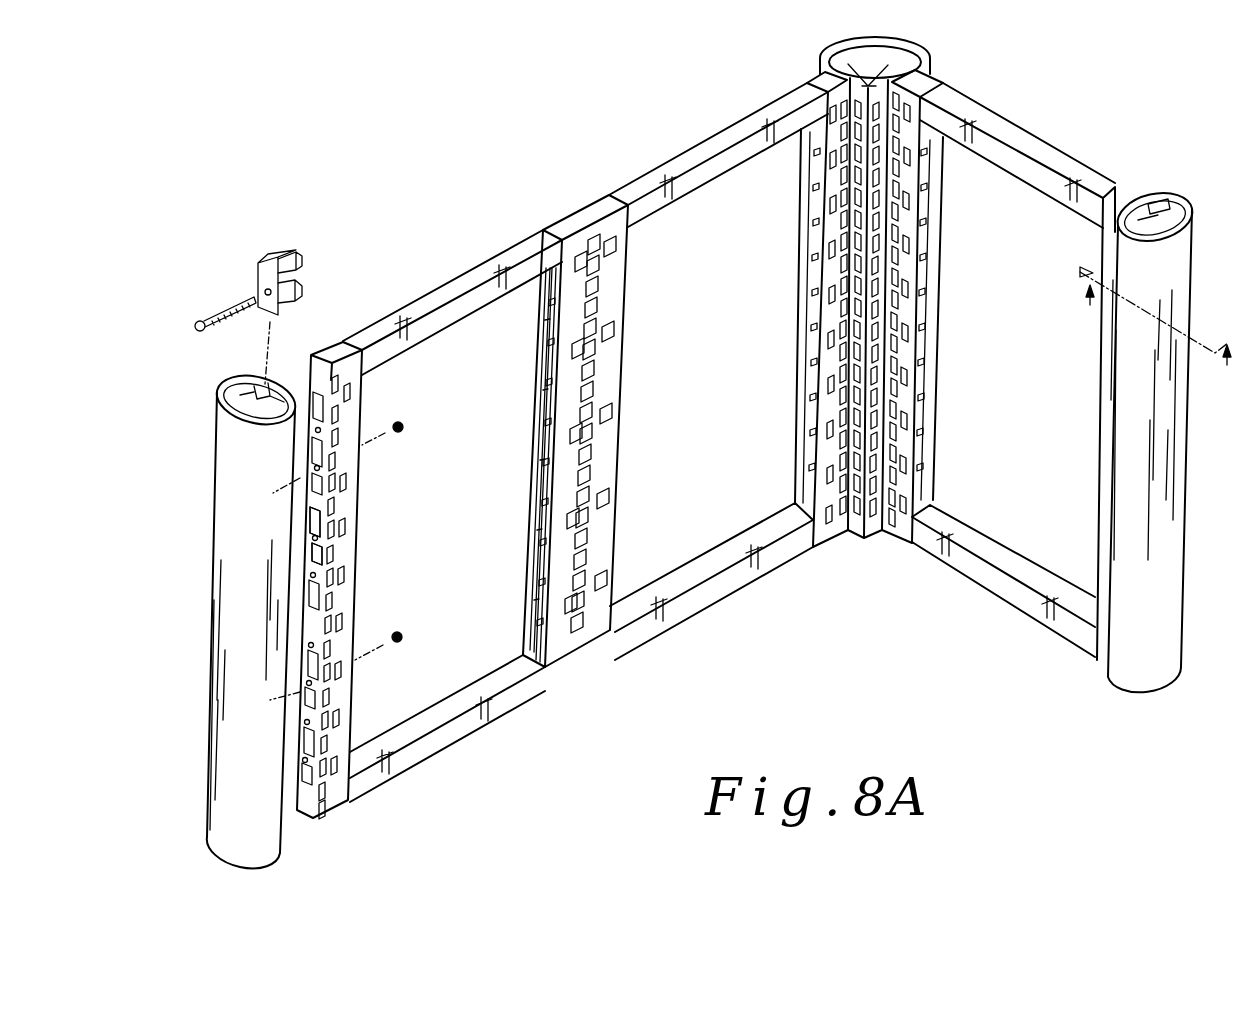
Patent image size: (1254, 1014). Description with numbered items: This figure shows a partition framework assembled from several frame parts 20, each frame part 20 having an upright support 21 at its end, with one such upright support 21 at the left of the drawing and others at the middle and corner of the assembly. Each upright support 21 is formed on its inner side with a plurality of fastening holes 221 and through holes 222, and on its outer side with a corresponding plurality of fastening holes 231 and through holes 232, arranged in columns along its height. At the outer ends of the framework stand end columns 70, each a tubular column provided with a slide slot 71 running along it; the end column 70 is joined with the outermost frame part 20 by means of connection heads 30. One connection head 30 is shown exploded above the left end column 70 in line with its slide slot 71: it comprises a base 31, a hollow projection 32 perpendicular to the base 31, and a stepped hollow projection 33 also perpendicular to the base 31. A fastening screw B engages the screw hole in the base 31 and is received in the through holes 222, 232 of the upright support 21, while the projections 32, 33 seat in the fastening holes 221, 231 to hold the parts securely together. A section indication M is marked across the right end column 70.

The frame part 20 is at (453, 288).
The upright support 21 is at (340, 346).
The fastening hole 221 is at (548, 382).
The through hole 222 is at (545, 403).
The fastening hole 231 is at (323, 520).
The through hole 232 is at (323, 541).
The connection head 30 is at (303, 280).
The base 31 is at (264, 278).
The hollow projection 32 is at (301, 300).
The stepped hollow projection 33 is at (301, 274).
The end column 70 is at (230, 470).
The slide slot 71 is at (268, 388).
The fastening screw B is at (196, 330).
The section line M is at (1160, 333).